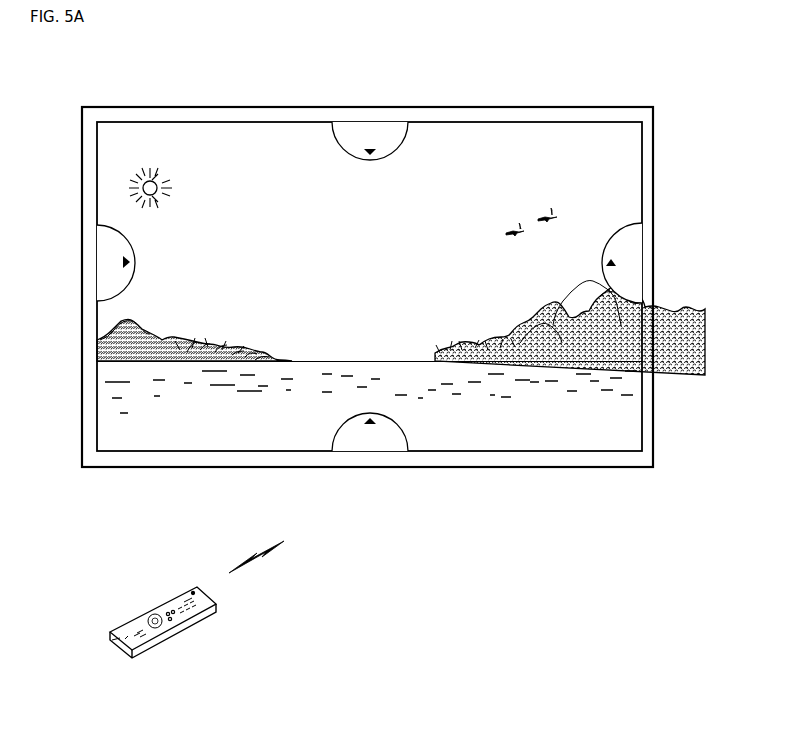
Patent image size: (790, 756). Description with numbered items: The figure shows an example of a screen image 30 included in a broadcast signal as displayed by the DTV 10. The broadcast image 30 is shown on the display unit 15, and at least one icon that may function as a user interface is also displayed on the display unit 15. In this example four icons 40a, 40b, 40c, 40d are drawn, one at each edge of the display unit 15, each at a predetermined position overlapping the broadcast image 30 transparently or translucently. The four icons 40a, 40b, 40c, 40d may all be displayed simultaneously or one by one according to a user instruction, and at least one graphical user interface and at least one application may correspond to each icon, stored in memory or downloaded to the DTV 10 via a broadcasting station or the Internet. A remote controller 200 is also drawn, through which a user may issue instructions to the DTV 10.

The DTV 10 is at (398, 107).
The display unit 15 is at (482, 122).
The screen image 30 is at (232, 165).
The icon 40a is at (344, 130).
The icon 40b is at (348, 453).
The icon 40c is at (97, 257).
The icon 40d is at (642, 234).
The remote controller 200 is at (180, 626).